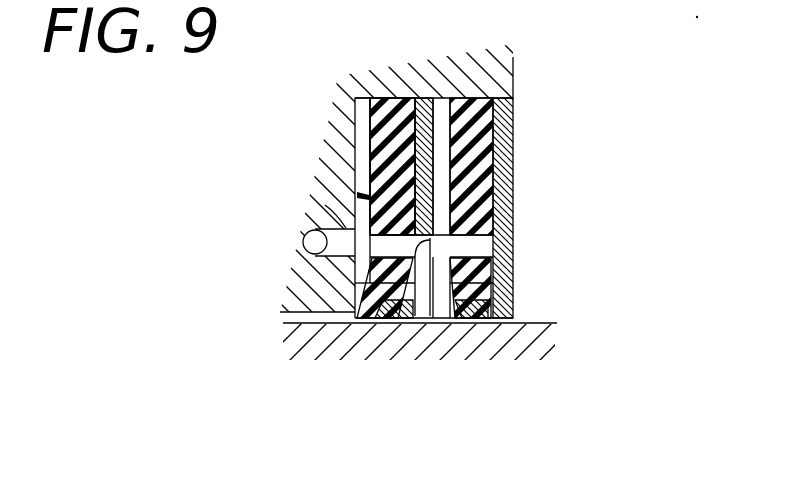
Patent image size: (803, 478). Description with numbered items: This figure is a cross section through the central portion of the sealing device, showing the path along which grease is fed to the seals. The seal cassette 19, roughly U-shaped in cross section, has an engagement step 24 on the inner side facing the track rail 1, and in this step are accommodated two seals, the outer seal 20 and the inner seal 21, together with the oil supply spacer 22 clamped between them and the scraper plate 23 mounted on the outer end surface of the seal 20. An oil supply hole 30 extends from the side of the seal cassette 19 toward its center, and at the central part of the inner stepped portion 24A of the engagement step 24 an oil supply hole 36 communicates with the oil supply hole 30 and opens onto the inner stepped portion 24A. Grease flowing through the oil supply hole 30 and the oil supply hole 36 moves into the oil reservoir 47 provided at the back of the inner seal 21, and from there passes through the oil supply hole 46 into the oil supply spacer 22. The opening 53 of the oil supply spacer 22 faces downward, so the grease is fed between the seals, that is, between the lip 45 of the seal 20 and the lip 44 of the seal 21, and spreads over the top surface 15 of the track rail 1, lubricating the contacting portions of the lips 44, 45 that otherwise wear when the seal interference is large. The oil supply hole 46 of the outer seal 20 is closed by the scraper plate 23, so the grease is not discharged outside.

The track rail 1 is at (315, 342).
The top surface 15 is at (530, 322).
The seal cassette 19 is at (475, 70).
The seal 20 is at (475, 196).
The seal 21 is at (397, 127).
The oil supply spacer 22 is at (433, 150).
The scraper plate 23 is at (505, 292).
The engagement step 24 is at (383, 100).
The inner stepped portion 24A is at (360, 126).
The oil supply hole 30 is at (315, 243).
The oil supply hole 36 is at (340, 235).
The lip 44 is at (428, 322).
The lip 45 is at (365, 322).
The oil supply hole 46 is at (418, 300).
The oil reservoir 47 is at (358, 305).
The opening 53 is at (470, 238).